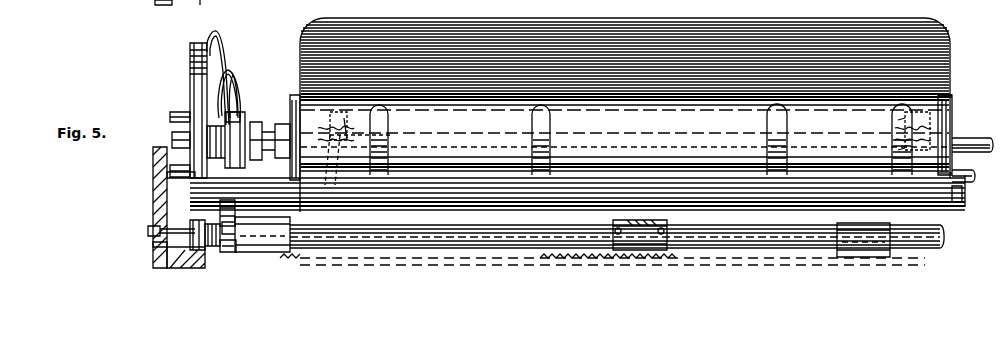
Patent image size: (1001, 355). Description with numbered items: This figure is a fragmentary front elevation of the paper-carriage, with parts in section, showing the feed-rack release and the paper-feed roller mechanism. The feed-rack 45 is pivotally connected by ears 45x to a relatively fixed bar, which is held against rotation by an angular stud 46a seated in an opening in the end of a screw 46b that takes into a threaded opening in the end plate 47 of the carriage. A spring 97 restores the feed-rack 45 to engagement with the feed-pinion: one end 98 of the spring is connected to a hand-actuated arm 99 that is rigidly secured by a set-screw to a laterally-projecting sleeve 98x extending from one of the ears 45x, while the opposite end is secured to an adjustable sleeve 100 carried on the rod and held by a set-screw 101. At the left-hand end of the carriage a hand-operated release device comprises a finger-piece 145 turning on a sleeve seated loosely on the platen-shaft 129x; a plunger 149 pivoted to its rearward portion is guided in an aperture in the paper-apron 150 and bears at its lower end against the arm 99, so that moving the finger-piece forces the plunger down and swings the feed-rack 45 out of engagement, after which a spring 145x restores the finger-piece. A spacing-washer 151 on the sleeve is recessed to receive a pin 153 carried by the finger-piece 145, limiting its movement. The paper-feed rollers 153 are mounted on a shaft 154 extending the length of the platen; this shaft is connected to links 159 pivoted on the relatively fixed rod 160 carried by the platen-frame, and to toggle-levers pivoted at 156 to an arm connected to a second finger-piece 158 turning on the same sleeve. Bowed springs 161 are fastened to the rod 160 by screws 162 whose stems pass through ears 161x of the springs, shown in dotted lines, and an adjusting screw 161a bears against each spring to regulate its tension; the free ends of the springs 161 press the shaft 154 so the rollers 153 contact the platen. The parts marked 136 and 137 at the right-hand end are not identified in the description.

The rod 160 is at (396, 19).
The paper-apron 150 is at (586, 175).
The links 159 is at (393, 130).
The paper-feed rollers 153 is at (733, 162).
The screws 162 is at (352, 137).
The bowed springs 161 is at (335, 125).
The screw 161a is at (905, 135).
The ears 161x is at (960, 127).
The end plate 136 is at (921, 106).
The end plate inner 137 is at (948, 102).
The platen-shaft 129x is at (968, 178).
The shaft 154 is at (963, 200).
The finger-piece 158 is at (216, 31).
The spring 145x is at (230, 90).
The finger-piece 145 is at (232, 82).
The pivot 156 is at (236, 110).
The spacing-washer 151 is at (243, 122).
The end plate 47 is at (153, 156).
The plunger 149 is at (188, 175).
The adjustable sleeve 100 is at (172, 266).
The screw 46b is at (148, 231).
The angular stud 46a is at (153, 250).
The set-screw 101 is at (198, 252).
The spring 97 is at (213, 247).
The sleeve 98x is at (228, 253).
The hand-actuated arm 99 is at (220, 212).
The spring end 98 is at (234, 228).
The feed-rack 45 is at (590, 252).
The ears 45x is at (870, 257).